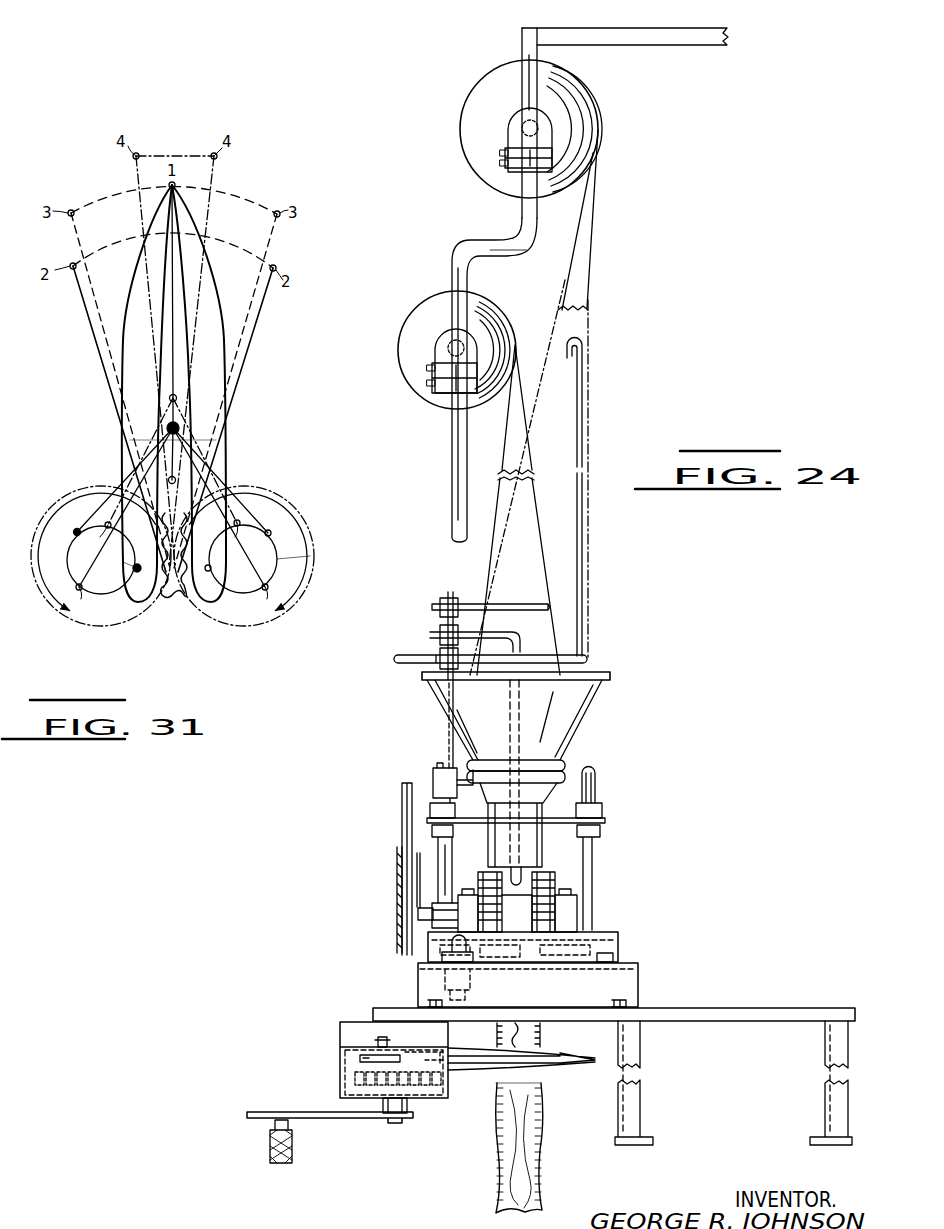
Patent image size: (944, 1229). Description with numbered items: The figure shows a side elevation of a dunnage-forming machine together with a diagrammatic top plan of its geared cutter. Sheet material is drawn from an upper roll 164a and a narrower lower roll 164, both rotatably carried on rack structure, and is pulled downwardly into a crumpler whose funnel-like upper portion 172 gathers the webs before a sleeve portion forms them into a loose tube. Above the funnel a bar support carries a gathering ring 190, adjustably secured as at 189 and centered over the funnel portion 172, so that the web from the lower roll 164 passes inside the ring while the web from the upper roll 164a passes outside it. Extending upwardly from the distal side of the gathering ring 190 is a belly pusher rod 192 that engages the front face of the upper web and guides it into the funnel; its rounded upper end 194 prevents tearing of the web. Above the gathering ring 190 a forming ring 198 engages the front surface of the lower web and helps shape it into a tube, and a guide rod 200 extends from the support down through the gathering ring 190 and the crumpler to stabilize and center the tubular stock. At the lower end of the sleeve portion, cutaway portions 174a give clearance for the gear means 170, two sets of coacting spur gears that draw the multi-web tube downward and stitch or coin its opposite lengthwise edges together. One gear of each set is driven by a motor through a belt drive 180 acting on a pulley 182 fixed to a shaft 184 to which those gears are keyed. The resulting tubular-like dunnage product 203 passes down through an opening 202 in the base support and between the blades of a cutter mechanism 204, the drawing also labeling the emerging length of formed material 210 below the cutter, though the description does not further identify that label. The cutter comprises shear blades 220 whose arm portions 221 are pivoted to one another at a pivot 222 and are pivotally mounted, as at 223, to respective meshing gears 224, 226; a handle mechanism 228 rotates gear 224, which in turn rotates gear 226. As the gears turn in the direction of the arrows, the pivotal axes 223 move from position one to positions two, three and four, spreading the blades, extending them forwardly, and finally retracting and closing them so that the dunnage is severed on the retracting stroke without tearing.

In FIG. 24, the upper roll 164a is at (480, 124).
In FIG. 24, the lower roll 164 is at (418, 378).
In FIG. 24, the rounded upper end 194 is at (587, 313).
In FIG. 24, the belly pusher rod 192 is at (583, 418).
In FIG. 24, the forming ring 198 is at (497, 606).
In FIG. 24, the gathering ring 190 is at (543, 657).
In FIG. 24, the adjustable securement 189 is at (438, 662).
In FIG. 24, the funnel-like upper portion 172 is at (582, 688).
In FIG. 24, the guide rod 200 is at (522, 720).
In FIG. 24, the cutaway portions 174a is at (527, 868).
In FIG. 24, the gear means 170 is at (470, 877).
In FIG. 24, the belt drive 180 is at (400, 803).
In FIG. 24, the pulley 182 is at (402, 938).
In FIG. 24, the shaft 184 is at (425, 921).
In FIG. 24, the opening 202 is at (527, 1010).
In FIG. 24, the cutter mechanism 204 is at (353, 1076).
In FIG. 31, the cutter mechanism 204 is at (302, 256).
In FIG. 24, the gear 224 is at (447, 1080).
In FIG. 31, the gear 224 is at (306, 545).
In FIG. 24, the pivotal mounting 223 is at (378, 1043).
In FIG. 31, the pivotal mounting 223 is at (148, 585).
In FIG. 24, the arm portions 221 is at (360, 1055).
In FIG. 31, the arm portions 221 is at (128, 565).
In FIG. 24, the pivot 222 is at (443, 1053).
In FIG. 31, the pivot 222 is at (179, 428).
In FIG. 24, the handle mechanism 228 is at (337, 1120).
In FIG. 24, the shear blades 220 is at (543, 1070).
In FIG. 31, the shear blades 220 is at (200, 277).
In FIG. 24, the formed strip 210 is at (547, 1172).
In FIG. 24, the tubular-like dunnage product 203 is at (493, 1197).
In FIG. 31, the gear 226 is at (43, 608).